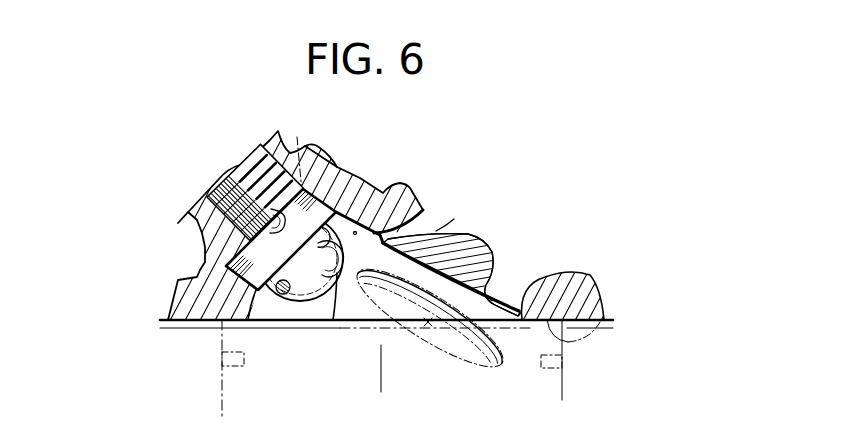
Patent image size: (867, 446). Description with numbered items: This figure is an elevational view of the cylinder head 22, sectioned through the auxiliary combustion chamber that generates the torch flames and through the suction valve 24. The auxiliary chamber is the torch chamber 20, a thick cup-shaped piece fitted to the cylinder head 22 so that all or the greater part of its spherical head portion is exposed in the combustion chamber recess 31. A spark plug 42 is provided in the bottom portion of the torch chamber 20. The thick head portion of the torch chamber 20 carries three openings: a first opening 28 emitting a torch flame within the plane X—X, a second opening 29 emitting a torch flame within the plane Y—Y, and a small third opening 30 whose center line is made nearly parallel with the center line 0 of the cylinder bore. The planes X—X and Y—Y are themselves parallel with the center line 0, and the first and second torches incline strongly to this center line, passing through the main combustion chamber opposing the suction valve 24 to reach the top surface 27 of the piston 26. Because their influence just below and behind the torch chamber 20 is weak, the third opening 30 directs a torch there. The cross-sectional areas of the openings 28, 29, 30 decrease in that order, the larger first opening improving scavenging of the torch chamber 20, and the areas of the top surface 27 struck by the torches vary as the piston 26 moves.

The center line of the cylinder bore 0 is at (383, 347).
The torch chamber 20 is at (325, 162).
The cylinder head 22 is at (407, 186).
The suction valve 24 is at (467, 247).
The piston 26 is at (513, 393).
The top surface of the piston 27 is at (603, 318).
The first opening 28 is at (335, 321).
The second opening 29 is at (297, 163).
The third opening 30 is at (285, 293).
The combustion chamber recess 31 is at (355, 233).
The spark plug 42 is at (212, 195).